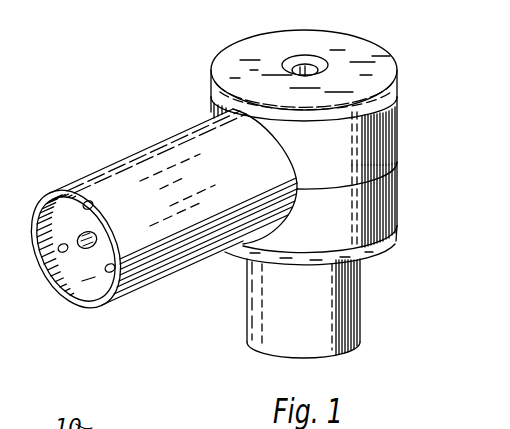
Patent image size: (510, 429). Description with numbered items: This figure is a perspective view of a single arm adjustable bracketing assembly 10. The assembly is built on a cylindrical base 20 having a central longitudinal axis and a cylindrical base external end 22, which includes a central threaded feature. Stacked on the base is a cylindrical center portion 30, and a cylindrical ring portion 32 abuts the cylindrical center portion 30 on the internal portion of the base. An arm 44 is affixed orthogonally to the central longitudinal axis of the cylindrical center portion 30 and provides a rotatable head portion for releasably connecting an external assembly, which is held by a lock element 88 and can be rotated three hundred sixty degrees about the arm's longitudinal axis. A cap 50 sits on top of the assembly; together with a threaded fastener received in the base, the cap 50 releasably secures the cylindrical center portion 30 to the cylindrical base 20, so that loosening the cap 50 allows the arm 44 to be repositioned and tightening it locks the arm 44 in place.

The single arm adjustable bracketing assembly 10 is at (150, 78).
The cap element 50 is at (258, 50).
The cylindrical center portion 30 is at (392, 114).
The cylindrical ring portion 32 is at (395, 190).
The cylindrical base 20 is at (380, 248).
The cylindrical base external end 22 is at (360, 300).
The arm 44 is at (145, 170).
The lock element 88 is at (62, 294).